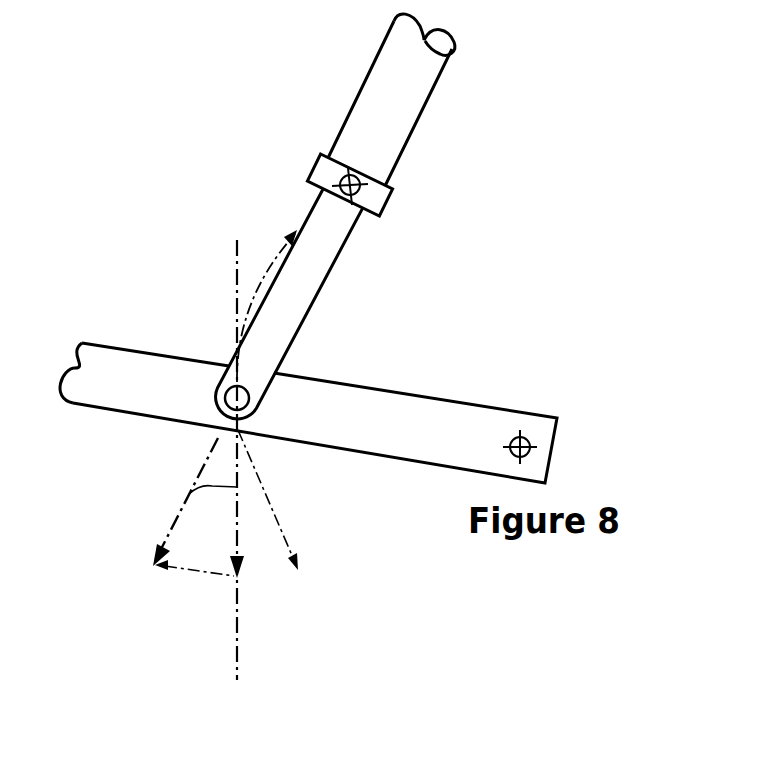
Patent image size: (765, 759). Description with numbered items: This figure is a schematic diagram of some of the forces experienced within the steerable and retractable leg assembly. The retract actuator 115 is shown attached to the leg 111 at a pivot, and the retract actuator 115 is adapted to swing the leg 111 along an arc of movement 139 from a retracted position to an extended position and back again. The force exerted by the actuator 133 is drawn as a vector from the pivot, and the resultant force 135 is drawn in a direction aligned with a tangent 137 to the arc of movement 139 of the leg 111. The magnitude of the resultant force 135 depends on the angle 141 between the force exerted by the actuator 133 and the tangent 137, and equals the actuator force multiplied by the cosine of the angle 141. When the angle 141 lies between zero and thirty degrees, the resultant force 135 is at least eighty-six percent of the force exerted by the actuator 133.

The leg 111 is at (155, 373).
The retract actuator 115 is at (403, 112).
The force exerted by the actuator 133 is at (167, 528).
The resultant force 135 is at (240, 540).
The tangent 137 is at (233, 298).
The arc of movement 139 is at (275, 532).
The angle 141 is at (190, 492).